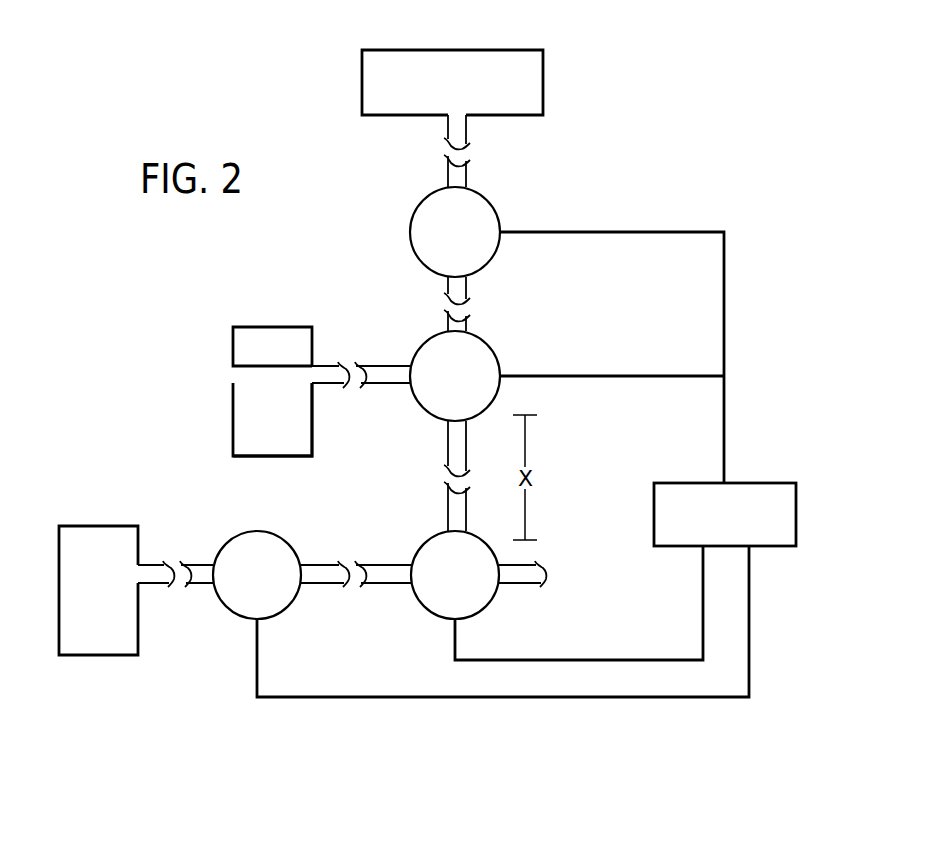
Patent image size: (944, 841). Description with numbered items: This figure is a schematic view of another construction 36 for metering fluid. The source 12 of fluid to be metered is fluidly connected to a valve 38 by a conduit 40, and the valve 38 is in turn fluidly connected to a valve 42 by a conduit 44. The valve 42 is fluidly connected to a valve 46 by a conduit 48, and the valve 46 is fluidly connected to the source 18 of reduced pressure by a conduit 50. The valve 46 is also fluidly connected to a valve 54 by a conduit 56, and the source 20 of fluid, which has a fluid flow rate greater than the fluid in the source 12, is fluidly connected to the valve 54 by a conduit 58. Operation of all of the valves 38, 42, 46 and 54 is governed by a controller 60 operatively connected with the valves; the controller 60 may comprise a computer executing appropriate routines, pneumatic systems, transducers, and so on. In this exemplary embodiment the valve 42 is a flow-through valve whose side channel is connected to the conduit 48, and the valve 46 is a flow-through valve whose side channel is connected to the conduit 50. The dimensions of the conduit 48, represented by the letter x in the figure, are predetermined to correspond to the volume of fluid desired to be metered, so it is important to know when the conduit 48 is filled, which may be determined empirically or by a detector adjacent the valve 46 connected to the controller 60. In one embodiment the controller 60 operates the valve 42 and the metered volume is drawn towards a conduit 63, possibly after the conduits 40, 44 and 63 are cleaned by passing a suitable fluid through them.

The source of fluid to be metered 12 is at (84, 656).
The source of reduced pressure 18 is at (233, 410).
The source of fluid 20 is at (543, 92).
The construction 36 is at (357, 708).
The valve 38 is at (296, 604).
The conduit 40 is at (155, 587).
The valve 42 is at (486, 602).
The conduit 44 is at (330, 587).
The valve 46 is at (494, 359).
The conduit 48 is at (447, 455).
The conduit 50 is at (338, 366).
The valve 54 is at (496, 206).
The conduit 56 is at (466, 283).
The conduit 58 is at (447, 127).
The controller 60 is at (752, 483).
The conduit 63 is at (527, 587).